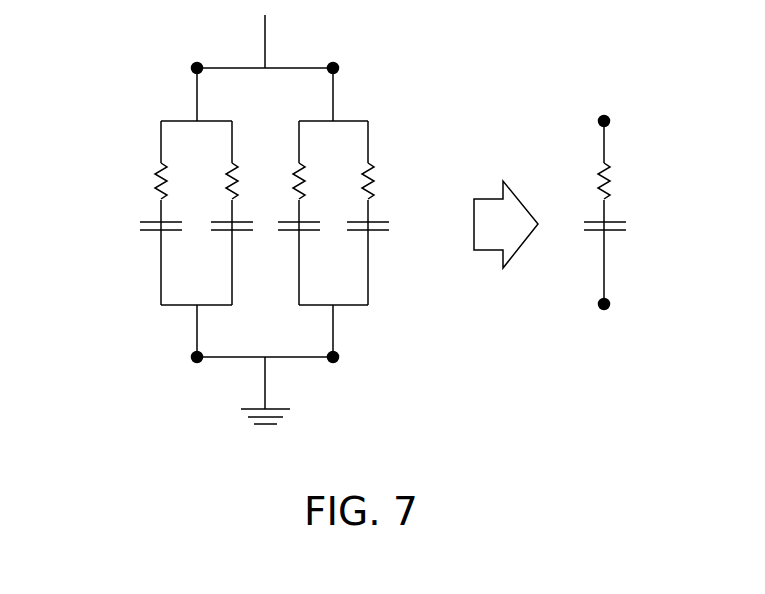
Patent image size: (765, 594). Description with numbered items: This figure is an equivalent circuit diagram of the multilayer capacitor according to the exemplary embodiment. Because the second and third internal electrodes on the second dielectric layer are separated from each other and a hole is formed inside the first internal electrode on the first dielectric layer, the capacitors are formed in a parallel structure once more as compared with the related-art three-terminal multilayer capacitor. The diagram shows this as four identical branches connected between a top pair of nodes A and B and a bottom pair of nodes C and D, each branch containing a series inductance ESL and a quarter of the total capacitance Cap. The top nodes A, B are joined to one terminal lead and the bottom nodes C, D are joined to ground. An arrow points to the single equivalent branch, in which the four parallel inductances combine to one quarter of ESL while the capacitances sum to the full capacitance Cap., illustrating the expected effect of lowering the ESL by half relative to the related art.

The first terminal node A is at (187, 68).
The second terminal node B is at (341, 68).
The third terminal node C is at (187, 358).
The fourth terminal node D is at (343, 358).
The equivalent series inductance ESL is at (240, 181).
The total capacitance Cap. is at (632, 227).